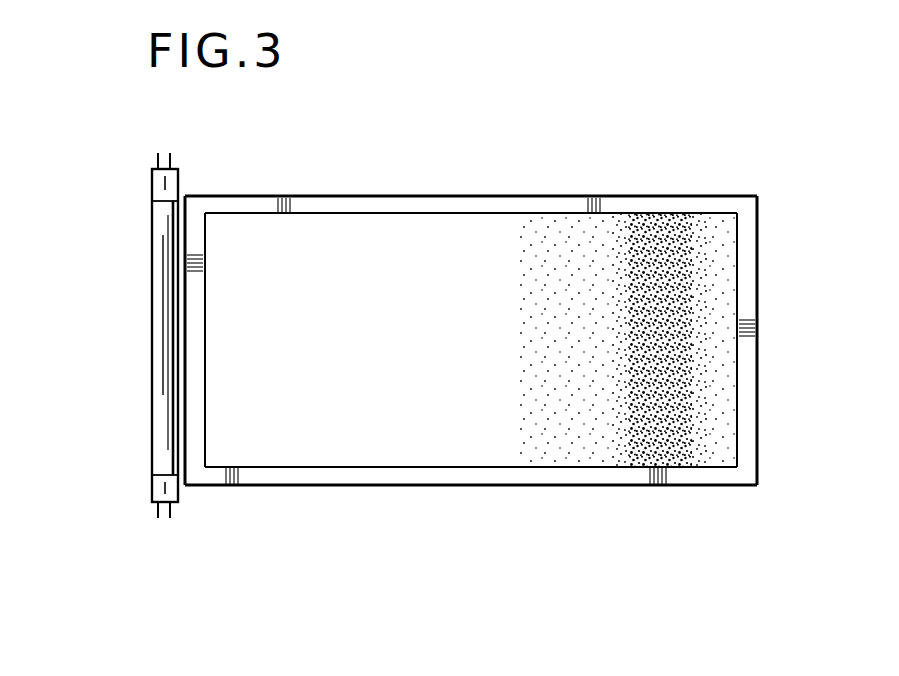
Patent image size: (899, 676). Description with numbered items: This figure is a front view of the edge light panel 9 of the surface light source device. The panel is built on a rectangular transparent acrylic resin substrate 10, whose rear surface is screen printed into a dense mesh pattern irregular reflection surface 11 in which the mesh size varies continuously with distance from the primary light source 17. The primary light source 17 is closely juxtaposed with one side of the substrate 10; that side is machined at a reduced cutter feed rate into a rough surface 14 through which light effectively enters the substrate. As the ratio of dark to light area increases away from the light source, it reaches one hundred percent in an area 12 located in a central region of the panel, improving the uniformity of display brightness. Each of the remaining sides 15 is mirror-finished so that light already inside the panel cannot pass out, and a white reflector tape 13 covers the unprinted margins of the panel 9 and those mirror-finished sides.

The edge light panel 9 is at (337, 573).
The transparent acrylic resin substrate 10 is at (227, 487).
The irregular reflection surface 11 is at (305, 450).
The 100% ratio area 12 is at (670, 486).
The white reflector tape 13 is at (460, 203).
The rough surface 14 is at (187, 367).
The remaining sides 15 is at (757, 310).
The primary light source 17 is at (153, 312).